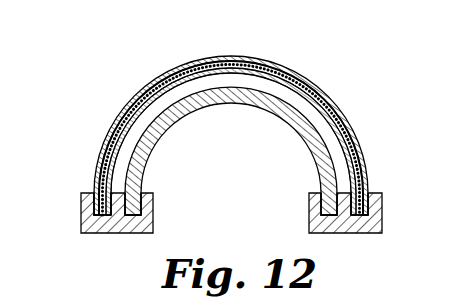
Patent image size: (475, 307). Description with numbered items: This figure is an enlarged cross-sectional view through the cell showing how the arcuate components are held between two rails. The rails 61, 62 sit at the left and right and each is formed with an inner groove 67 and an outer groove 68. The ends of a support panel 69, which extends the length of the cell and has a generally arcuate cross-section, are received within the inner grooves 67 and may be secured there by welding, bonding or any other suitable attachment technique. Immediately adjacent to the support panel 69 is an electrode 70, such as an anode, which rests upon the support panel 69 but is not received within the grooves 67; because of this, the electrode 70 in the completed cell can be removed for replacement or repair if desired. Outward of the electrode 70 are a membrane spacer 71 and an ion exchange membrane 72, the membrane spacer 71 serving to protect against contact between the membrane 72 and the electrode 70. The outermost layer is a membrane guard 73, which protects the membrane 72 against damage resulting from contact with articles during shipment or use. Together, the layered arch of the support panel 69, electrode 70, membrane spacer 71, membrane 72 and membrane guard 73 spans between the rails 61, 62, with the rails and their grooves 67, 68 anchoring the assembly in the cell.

The rail 61 is at (81, 226).
The rail 62 is at (382, 226).
The inner groove 67 is at (145, 190).
The outer groove 68 is at (93, 192).
The support panel 69 is at (233, 100).
The electrode 70 is at (122, 120).
The membrane spacer 71 is at (157, 77).
The ion exchange membrane 72 is at (174, 72).
The membrane guard 73 is at (233, 57).